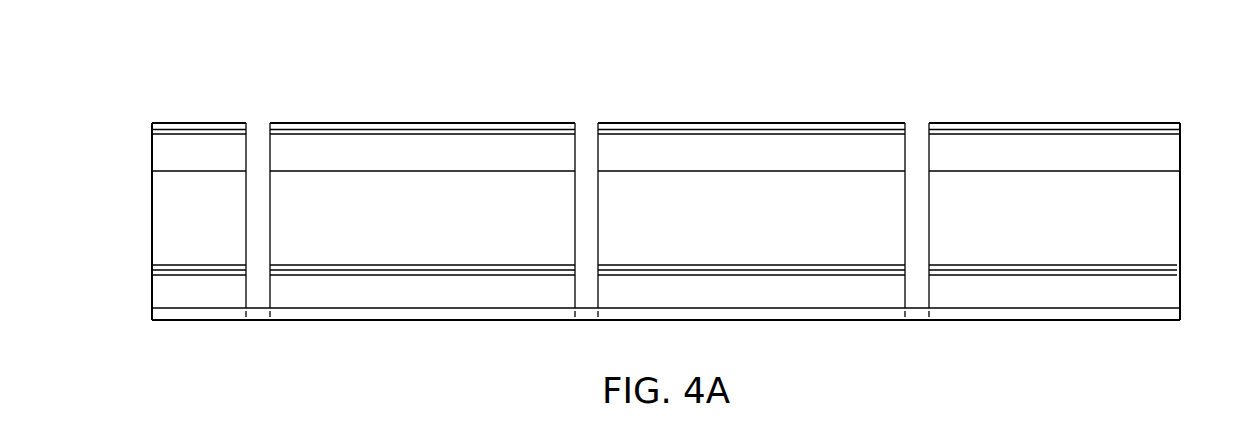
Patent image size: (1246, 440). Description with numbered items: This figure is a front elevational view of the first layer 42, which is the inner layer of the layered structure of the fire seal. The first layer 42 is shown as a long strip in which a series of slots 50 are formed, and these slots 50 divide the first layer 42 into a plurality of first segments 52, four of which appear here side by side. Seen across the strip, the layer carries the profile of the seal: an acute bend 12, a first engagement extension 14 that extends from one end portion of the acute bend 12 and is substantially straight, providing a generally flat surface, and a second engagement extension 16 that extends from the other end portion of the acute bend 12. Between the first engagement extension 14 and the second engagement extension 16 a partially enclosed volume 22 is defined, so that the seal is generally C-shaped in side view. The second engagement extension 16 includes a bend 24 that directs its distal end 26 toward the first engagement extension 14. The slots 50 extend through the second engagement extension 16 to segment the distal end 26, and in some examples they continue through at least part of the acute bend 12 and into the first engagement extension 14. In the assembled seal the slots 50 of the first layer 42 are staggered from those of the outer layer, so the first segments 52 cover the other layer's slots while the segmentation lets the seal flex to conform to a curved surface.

The acute bend 12 is at (1167, 221).
The first engagement extension 14 is at (1161, 308).
The second engagement extension 16 is at (1167, 151).
The partially enclosed volume 22 is at (177, 200).
The bend 24 is at (428, 121).
The distal end 26 is at (494, 157).
The first layer 42 is at (998, 92).
The slots 50 is at (259, 121).
The first segments 52 is at (212, 227).